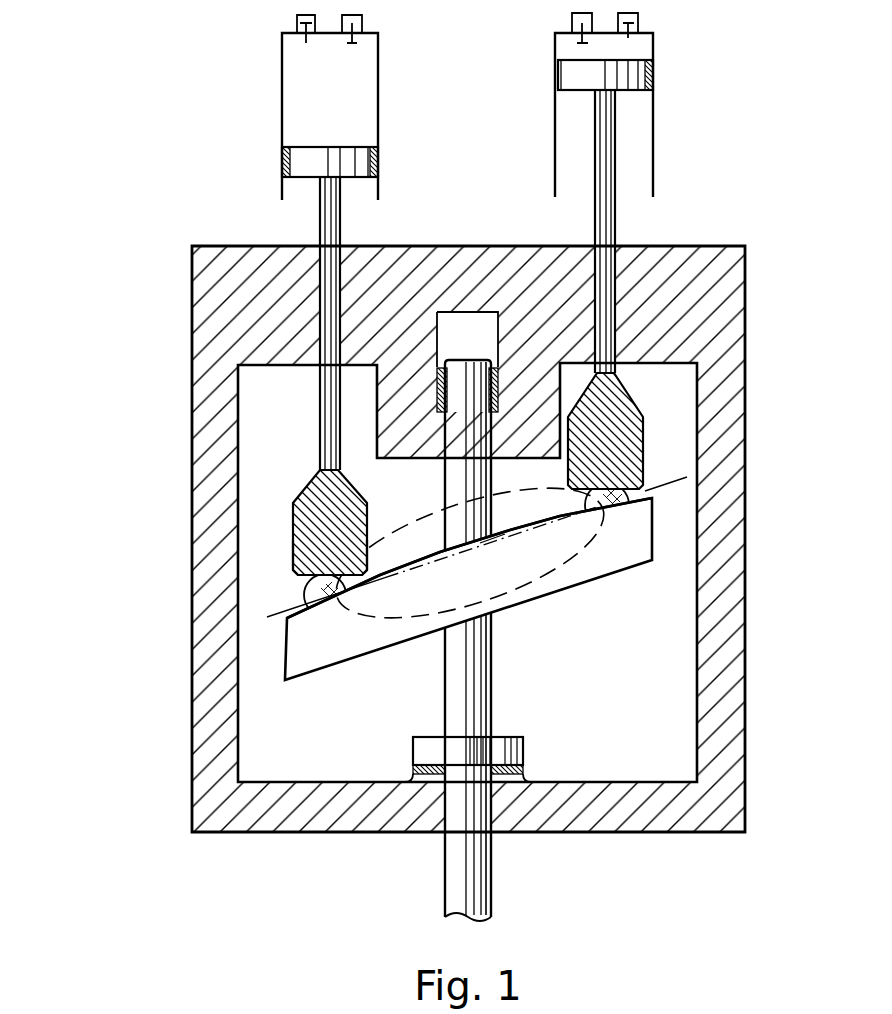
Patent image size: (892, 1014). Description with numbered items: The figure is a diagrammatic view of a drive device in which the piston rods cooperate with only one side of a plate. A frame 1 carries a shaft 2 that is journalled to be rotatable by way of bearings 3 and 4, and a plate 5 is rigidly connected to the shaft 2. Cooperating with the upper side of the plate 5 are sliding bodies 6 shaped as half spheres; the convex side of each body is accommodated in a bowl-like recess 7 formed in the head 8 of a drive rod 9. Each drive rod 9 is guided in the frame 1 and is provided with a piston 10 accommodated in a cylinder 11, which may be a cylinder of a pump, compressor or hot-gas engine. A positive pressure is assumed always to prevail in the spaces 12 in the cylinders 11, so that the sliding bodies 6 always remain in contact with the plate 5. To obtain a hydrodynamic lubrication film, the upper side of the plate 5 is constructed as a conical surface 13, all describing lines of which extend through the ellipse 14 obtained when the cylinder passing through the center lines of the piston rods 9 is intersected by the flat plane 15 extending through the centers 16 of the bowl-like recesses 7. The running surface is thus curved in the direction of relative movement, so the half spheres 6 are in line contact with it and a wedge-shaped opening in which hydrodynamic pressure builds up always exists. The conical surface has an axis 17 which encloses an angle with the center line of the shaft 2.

The frame 1 is at (206, 665).
The shaft 2 is at (464, 692).
The bearing 3 is at (503, 356).
The bearing 4 is at (514, 784).
The plate 5 is at (612, 555).
The sliding body 6 is at (310, 596).
The bowl-like recess 7 is at (300, 552).
The head 8 is at (318, 500).
The drive rod 9 is at (330, 290).
The piston 10 is at (360, 162).
The cylinder 11 is at (379, 106).
The space 12 is at (312, 90).
The conical surface 13 is at (533, 524).
The ellipse 14 is at (540, 592).
The flat plane 15 is at (404, 560).
The center 16 is at (626, 508).
The axis 17 is at (494, 536).